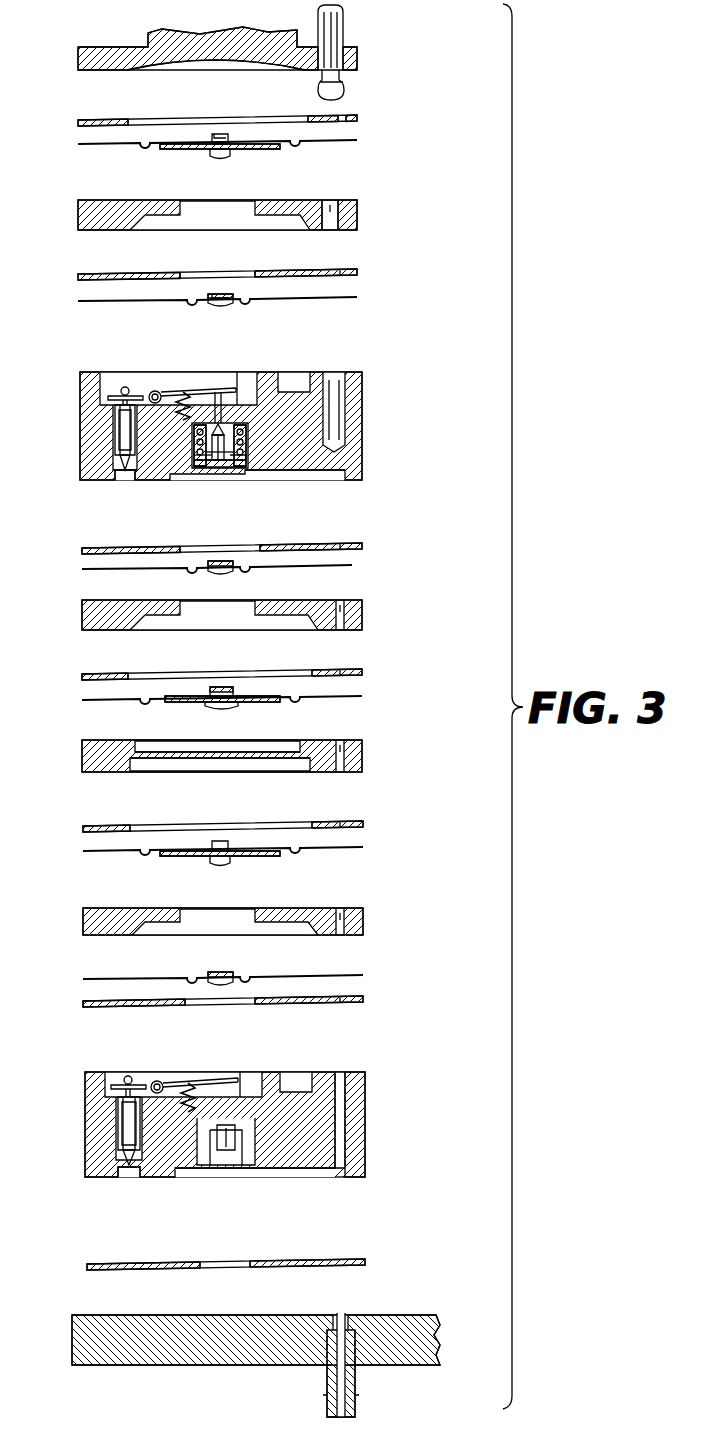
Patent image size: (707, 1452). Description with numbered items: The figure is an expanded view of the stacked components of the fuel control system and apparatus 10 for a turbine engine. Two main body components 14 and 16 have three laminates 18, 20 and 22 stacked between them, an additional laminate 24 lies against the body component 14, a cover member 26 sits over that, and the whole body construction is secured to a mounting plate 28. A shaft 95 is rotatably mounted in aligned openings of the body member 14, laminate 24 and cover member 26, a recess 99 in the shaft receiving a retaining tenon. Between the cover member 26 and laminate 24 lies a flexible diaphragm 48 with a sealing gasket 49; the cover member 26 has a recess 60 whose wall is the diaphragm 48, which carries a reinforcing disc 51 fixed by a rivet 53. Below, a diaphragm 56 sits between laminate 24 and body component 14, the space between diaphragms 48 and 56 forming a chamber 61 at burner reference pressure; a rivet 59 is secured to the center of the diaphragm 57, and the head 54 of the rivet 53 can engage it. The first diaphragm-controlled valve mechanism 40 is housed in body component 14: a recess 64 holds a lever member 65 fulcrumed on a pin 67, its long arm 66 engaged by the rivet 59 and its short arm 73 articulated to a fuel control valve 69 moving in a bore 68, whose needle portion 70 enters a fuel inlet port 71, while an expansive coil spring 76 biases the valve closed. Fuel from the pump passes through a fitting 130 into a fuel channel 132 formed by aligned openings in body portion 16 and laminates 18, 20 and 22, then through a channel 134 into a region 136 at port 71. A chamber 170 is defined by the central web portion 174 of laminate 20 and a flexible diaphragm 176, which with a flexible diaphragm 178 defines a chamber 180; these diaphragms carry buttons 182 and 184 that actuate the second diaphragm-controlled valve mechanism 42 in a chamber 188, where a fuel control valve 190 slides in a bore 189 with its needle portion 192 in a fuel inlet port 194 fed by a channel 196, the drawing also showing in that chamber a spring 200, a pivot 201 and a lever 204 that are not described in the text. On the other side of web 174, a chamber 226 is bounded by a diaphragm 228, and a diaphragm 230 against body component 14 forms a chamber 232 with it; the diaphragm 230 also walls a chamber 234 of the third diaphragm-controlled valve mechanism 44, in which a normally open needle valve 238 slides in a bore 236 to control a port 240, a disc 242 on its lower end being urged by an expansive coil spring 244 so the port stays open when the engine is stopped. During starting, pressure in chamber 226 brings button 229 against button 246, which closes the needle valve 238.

The fuel control system and apparatus 10 is at (371, 36).
The main body component 14 is at (232, 426).
The main body component 16 is at (221, 1115).
The laminate 18 is at (198, 624).
The laminate 20 is at (198, 757).
The laminate 22 is at (199, 908).
The laminate 24 is at (196, 201).
The cover member 26 is at (216, 50).
The mounting plate 28 is at (264, 1338).
The diaphragm-controlled valve mechanism 40 is at (90, 421).
The second diaphragm-controlled valve mechanism 42 is at (87, 1119).
The third diaphragm-controlled valve mechanism 44 is at (270, 449).
The flexible diaphragm 48 is at (197, 147).
The sealing gasket 49 is at (103, 120).
The reinforcing disc 51 is at (167, 147).
The rivet 53 is at (257, 147).
The head 54 is at (210, 152).
The diaphragm 56 is at (217, 312).
The diaphragm 57 is at (110, 275).
The rivet 59 is at (207, 305).
The recess 60 is at (213, 60).
The chamber 61 is at (188, 210).
The recess 64 is at (279, 372).
The lever member 65 is at (250, 378).
The long arm 66 is at (222, 389).
The pin 67 is at (156, 390).
The bore 68 is at (112, 423).
The fuel control valve 69 is at (128, 430).
The needle portion 70 is at (125, 460).
The fuel inlet port 71 is at (123, 480).
The short arm 73 is at (118, 390).
The expansive coil spring 76 is at (186, 392).
The shaft 95 is at (320, 16).
The recess 99 is at (342, 82).
The fitting 130 is at (357, 1373).
The fuel channel 132 is at (340, 600).
The channel 134 is at (297, 477).
The region 136 is at (128, 478).
The chamber 170 is at (207, 763).
The central web portion 174 is at (218, 752).
The flexible diaphragm 176 is at (215, 853).
The flexible diaphragm 178 is at (223, 980).
The chamber 180 is at (208, 918).
The button 182 is at (213, 860).
The button 184 is at (243, 982).
The chamber 188 is at (250, 1082).
The bore 189 is at (110, 1108).
The fuel control valve 190 is at (123, 1122).
The needle portion 192 is at (128, 1155).
The fuel inlet port 194 is at (128, 1167).
The channel 196 is at (297, 1170).
The spring 200 is at (194, 1090).
The pivot 201 is at (167, 1052).
The lever 204 is at (235, 1077).
The chamber 226 is at (200, 747).
The diaphragm 228 is at (147, 698).
The button 229 is at (233, 692).
The diaphragm 230 is at (185, 570).
The chamber 232 is at (213, 618).
The chamber 234 is at (237, 473).
The bore 236 is at (228, 426).
The needle valve 238 is at (233, 440).
The port 240 is at (220, 413).
The disc 242 is at (210, 467).
The expansive coil spring 244 is at (162, 486).
The button 246 is at (224, 560).